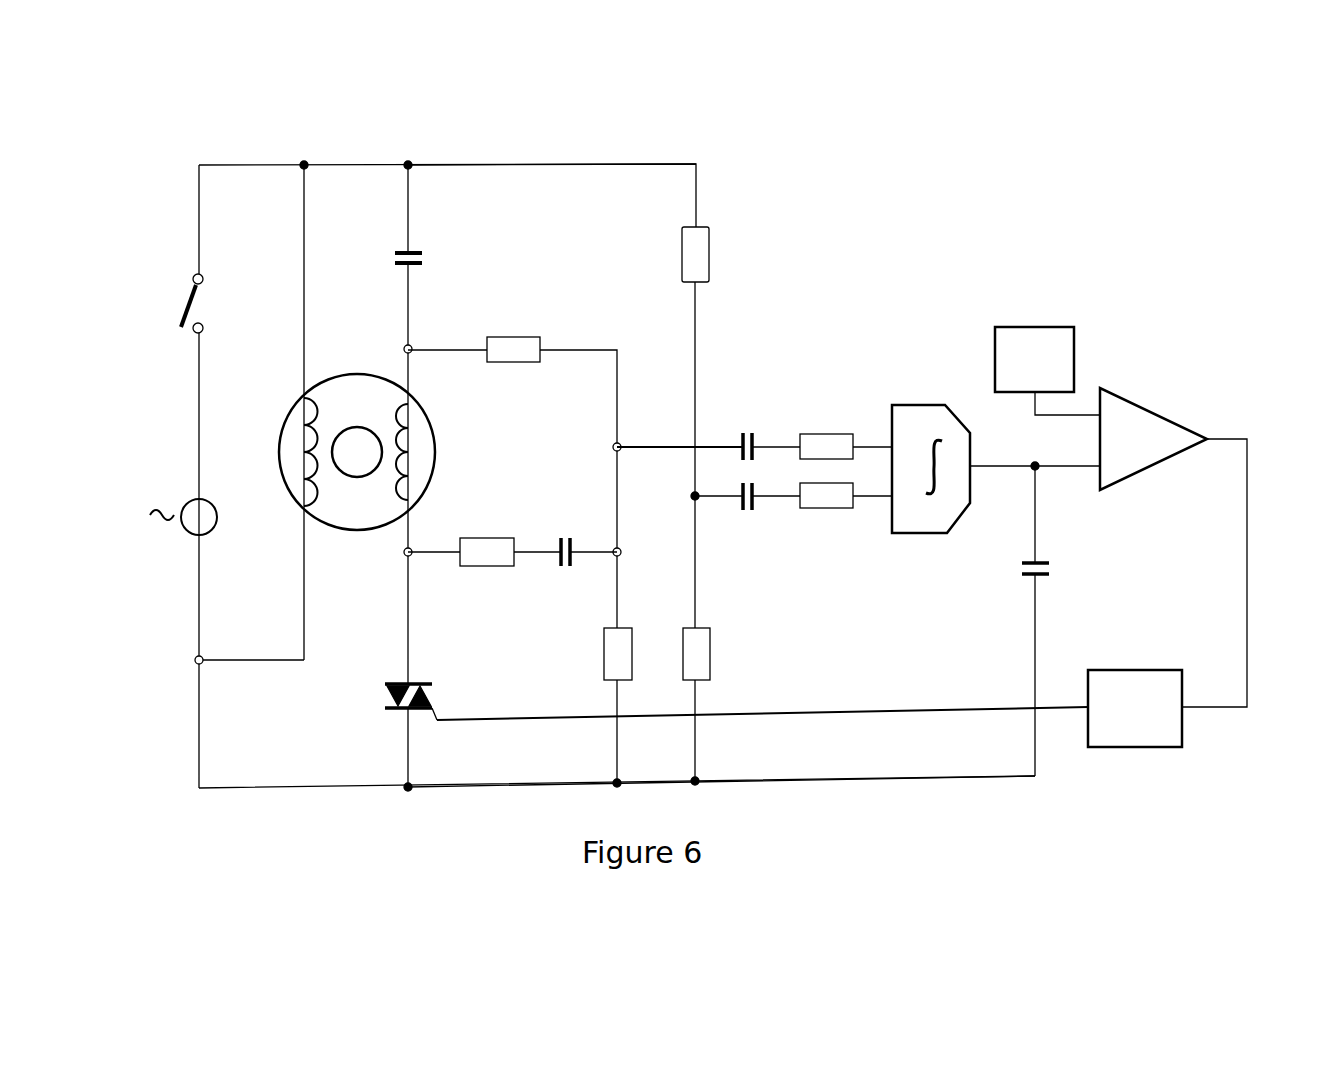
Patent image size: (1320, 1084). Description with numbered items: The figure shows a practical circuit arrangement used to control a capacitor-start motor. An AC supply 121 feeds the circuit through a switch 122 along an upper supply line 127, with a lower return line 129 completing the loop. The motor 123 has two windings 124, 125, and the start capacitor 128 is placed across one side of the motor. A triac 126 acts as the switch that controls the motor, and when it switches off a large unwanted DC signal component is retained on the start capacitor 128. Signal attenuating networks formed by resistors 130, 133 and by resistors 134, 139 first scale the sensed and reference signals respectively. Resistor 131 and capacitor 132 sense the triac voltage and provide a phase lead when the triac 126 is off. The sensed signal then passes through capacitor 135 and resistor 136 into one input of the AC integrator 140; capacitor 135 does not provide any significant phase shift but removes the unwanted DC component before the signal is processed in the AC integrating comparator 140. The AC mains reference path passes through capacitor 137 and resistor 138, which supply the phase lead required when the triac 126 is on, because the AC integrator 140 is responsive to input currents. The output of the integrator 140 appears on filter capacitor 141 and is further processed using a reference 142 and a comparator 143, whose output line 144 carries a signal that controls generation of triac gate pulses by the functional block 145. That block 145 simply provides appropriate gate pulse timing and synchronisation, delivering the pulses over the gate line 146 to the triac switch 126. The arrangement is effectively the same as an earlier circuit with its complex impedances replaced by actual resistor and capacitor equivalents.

The AC power source 121 is at (195, 530).
The switch 122 is at (182, 305).
The motor 123 is at (353, 376).
The motor winding 124 is at (420, 432).
The motor winding 125 is at (303, 420).
The triac 126 is at (397, 684).
The supply line 127 is at (520, 163).
The start capacitor 128 is at (428, 258).
The return line 129 is at (488, 786).
The signal attenuating network resistor 130 is at (520, 337).
The resistor 131 is at (494, 538).
The capacitor 132 is at (562, 568).
The signal attenuating network resistor 133 is at (604, 665).
The signal attenuating network resistor 134 is at (710, 245).
The capacitor 135 is at (753, 432).
The resistor 136 is at (825, 432).
The capacitor 137 is at (753, 510).
The resistor 138 is at (826, 509).
The signal attenuating network resistor 139 is at (710, 662).
The AC integrator 140 is at (930, 534).
The filter capacitor 141 is at (1050, 573).
The reference 142 is at (1035, 327).
The comparator 143 is at (1150, 410).
The output line 144 is at (1248, 615).
The functional block 145 is at (1132, 670).
The gate line 146 is at (840, 714).